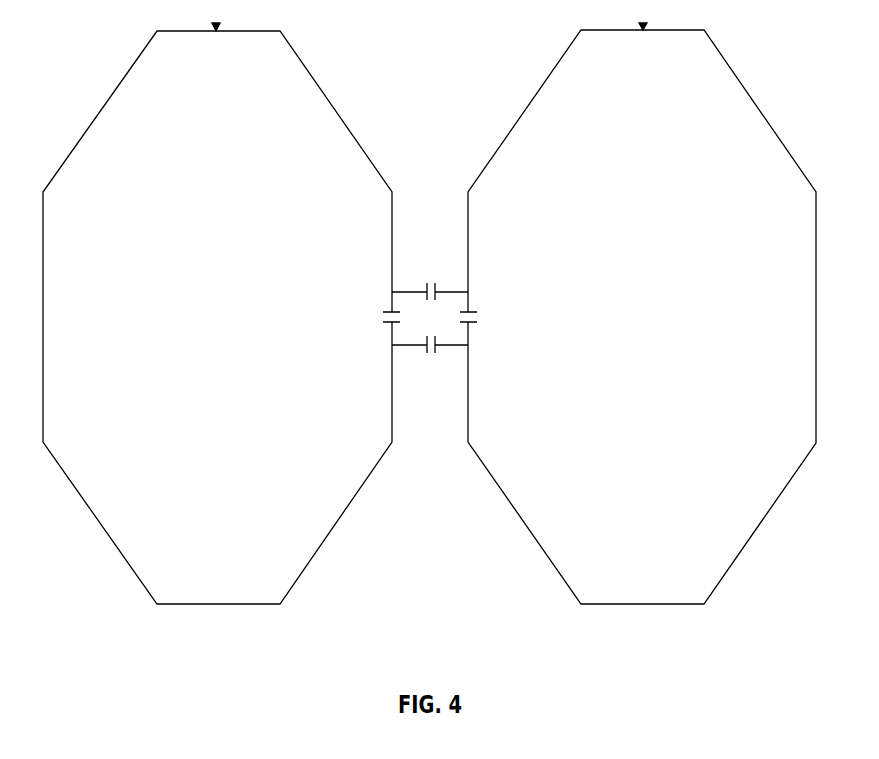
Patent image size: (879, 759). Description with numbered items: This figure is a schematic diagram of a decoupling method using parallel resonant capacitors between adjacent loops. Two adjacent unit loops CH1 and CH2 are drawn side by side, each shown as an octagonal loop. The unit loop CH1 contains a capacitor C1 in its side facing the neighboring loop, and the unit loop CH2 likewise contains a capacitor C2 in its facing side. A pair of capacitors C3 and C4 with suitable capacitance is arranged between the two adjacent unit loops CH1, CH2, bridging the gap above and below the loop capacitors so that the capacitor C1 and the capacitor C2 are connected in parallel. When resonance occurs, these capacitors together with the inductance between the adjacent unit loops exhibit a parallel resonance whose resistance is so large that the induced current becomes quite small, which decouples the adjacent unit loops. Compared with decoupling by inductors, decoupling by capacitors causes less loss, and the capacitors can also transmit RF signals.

The unit loop CH1 is at (217, 313).
The unit loop CH2 is at (642, 313).
The capacitor C1 is at (371, 318).
The capacitor C2 is at (487, 318).
The capacitor C3 is at (430, 277).
The capacitor C4 is at (430, 359).